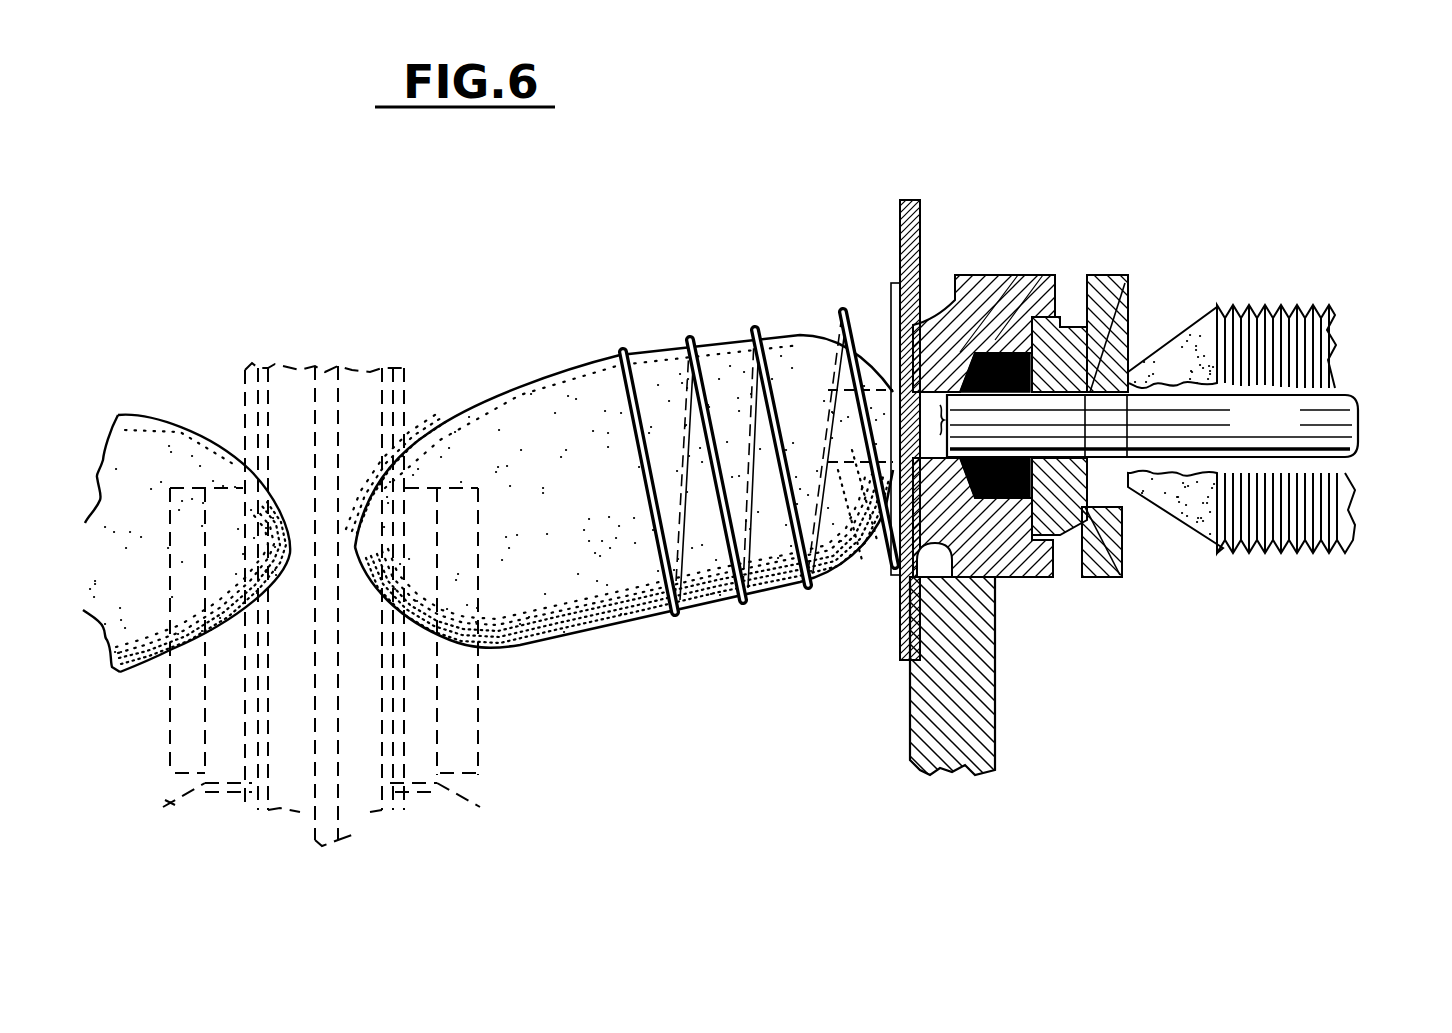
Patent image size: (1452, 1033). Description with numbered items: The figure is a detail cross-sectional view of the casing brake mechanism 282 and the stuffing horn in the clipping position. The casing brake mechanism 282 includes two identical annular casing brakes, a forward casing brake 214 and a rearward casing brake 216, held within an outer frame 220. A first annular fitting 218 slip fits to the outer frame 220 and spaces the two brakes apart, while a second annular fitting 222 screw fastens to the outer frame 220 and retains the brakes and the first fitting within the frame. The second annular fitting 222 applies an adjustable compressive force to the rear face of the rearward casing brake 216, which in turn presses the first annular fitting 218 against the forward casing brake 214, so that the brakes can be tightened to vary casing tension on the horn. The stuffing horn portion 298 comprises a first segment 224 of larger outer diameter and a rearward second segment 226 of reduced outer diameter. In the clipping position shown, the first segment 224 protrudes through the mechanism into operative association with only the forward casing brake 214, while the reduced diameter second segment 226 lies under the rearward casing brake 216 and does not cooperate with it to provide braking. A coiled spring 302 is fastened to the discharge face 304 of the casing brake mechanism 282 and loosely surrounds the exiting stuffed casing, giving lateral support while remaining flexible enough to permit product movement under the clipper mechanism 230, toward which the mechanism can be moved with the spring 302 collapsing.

The forward casing brake 214 is at (1018, 275).
The rearward casing brake 216 is at (1130, 300).
The first annular fitting 218 is at (1043, 275).
The outer frame 220 is at (952, 278).
The second annular fitting 222 is at (1113, 533).
The first segment 224 is at (935, 436).
The second segment 226 is at (1287, 436).
The clipper mechanism 230 is at (358, 365).
The casing brake mechanism 282 is at (968, 797).
The stuffing horn portion 298 is at (1355, 455).
The coiled spring 302 is at (672, 618).
The discharge face 304 is at (900, 665).